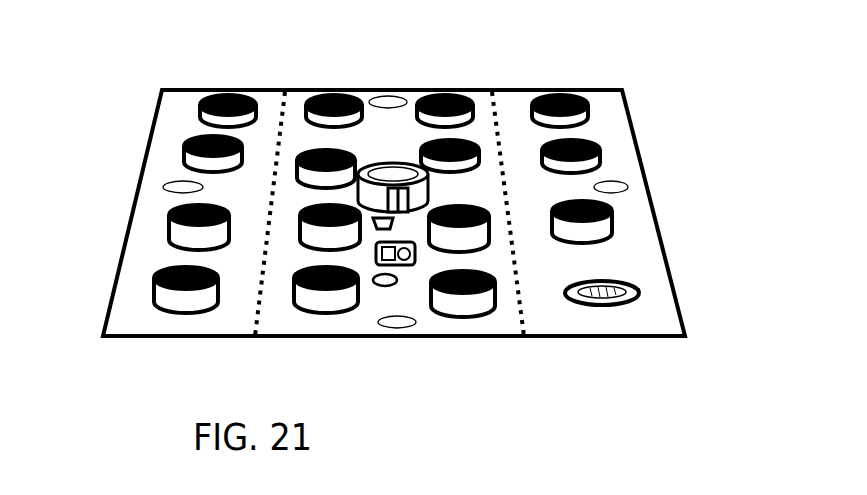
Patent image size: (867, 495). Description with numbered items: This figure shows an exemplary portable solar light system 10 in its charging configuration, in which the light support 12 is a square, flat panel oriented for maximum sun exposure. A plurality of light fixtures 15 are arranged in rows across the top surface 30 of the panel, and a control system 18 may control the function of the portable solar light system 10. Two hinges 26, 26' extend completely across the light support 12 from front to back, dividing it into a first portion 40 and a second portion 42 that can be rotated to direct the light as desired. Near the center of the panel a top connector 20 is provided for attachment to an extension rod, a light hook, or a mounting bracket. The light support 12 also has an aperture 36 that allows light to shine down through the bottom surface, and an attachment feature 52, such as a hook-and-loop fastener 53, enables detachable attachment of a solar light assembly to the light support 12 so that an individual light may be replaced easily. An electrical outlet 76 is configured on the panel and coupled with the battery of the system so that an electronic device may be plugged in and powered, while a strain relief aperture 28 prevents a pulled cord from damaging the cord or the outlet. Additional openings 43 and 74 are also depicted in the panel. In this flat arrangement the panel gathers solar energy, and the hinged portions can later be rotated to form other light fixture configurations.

The portable solar light system 10 is at (142, 88).
The light support 12 is at (600, 123).
The light fixture 15 is at (593, 232).
The control system 18 is at (170, 238).
The top connector 20 is at (392, 172).
The hinge 26 is at (252, 173).
The hinge 26' is at (534, 185).
The strain relief aperture 28 is at (612, 187).
The top surface 30 is at (617, 140).
The aperture 36 is at (585, 303).
The first portion 40 is at (187, 107).
The second portion 42 is at (560, 90).
The opening 43 is at (363, 100).
The attachment feature 52 is at (640, 288).
The hook-and-loop fastener 53 is at (615, 305).
The opening 74 is at (378, 287).
The electrical outlet 76 is at (412, 263).